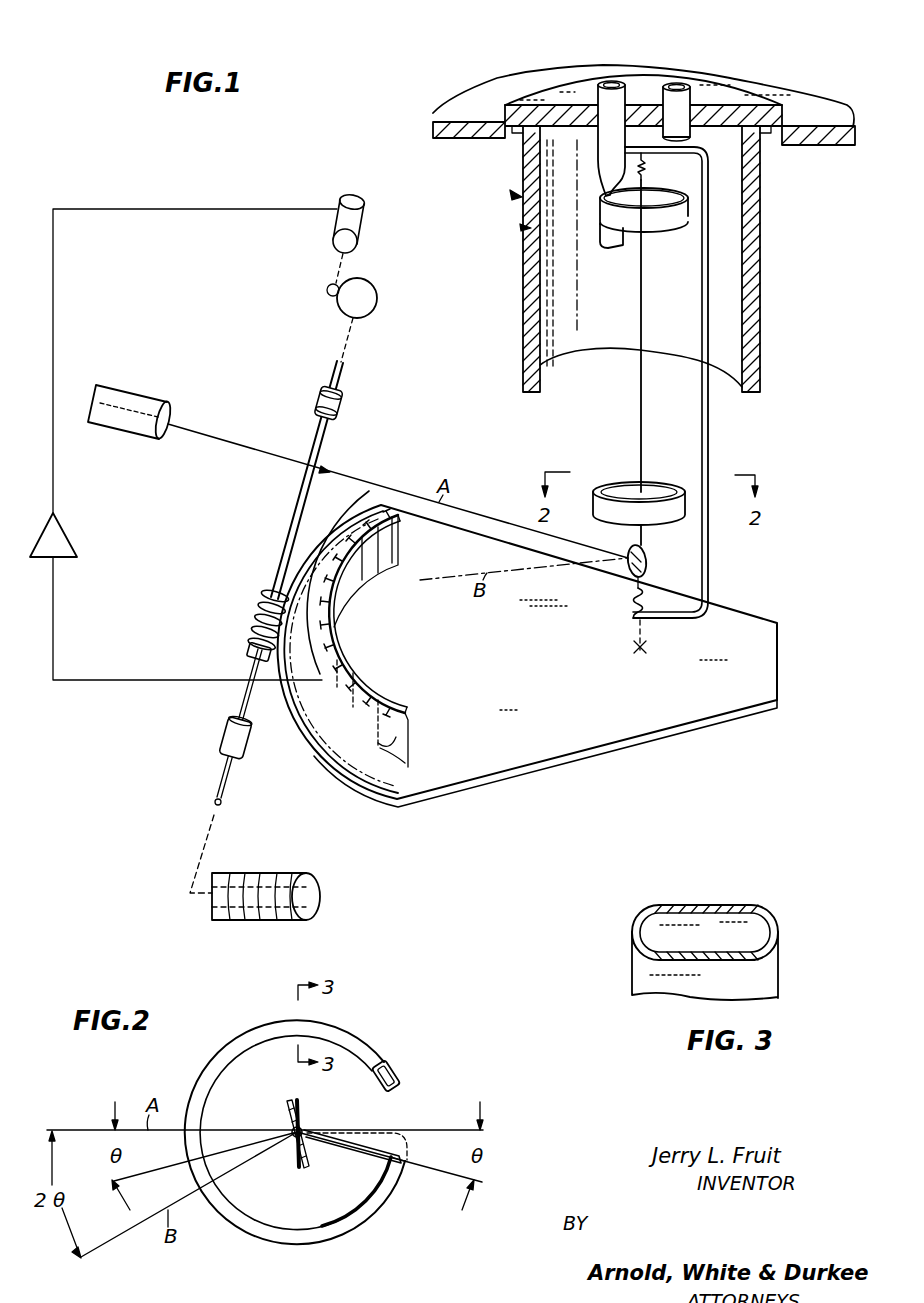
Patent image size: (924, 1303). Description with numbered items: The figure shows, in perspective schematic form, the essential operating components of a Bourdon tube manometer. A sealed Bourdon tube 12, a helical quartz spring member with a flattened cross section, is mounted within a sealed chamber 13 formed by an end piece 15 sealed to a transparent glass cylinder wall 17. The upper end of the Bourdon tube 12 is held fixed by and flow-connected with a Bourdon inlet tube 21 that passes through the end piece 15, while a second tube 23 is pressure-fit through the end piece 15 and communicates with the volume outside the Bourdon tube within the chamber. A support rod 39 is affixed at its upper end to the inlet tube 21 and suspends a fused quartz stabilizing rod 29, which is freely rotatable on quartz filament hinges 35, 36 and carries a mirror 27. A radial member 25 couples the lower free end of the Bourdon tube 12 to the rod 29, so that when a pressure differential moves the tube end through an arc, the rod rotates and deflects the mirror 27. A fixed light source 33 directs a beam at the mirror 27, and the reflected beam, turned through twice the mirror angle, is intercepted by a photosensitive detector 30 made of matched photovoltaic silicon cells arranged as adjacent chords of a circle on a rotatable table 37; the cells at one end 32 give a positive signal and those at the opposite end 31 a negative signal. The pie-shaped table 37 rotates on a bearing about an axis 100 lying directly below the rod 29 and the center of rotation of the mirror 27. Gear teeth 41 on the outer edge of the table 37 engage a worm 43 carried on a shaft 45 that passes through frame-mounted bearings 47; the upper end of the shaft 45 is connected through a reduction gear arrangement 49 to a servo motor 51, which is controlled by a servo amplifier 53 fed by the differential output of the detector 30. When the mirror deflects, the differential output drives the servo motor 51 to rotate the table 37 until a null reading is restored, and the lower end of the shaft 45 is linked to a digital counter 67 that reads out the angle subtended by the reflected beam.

In FIG. 1, the Bourdon tube 12 is at (613, 238).
In FIG. 2, the Bourdon tube 12 is at (366, 1046).
In FIG. 3, the Bourdon tube 12 is at (774, 913).
In FIG. 1, the sealed chamber 13 is at (606, 329).
In FIG. 1, the end piece 15 is at (560, 85).
In FIG. 1, the transparent cylinder wall 17 is at (530, 197).
In FIG. 1, the Bourdon inlet tube 21 is at (632, 97).
In FIG. 1, the tube 23 is at (692, 93).
In FIG. 1, the radial member 25 is at (650, 487).
In FIG. 2, the radial member 25 is at (358, 1145).
In FIG. 1, the mirror 27 is at (647, 560).
In FIG. 2, the mirror 27 is at (294, 1168).
In FIG. 1, the stabilizing rod 29 is at (640, 388).
In FIG. 1, the photosensitive detector 30 is at (383, 638).
In FIG. 1, the cells at opposite end 31 is at (393, 702).
In FIG. 1, the cells at one end 32 is at (353, 586).
In FIG. 1, the light source 33 is at (148, 403).
In FIG. 1, the quartz filament hinge 35 is at (645, 171).
In FIG. 1, the quartz filament hinge 36 is at (630, 600).
In FIG. 1, the rotatable table 37 is at (544, 699).
In FIG. 1, the support rod 39 is at (703, 575).
In FIG. 1, the gear teeth 41 is at (370, 785).
In FIG. 1, the worm 43 is at (253, 617).
In FIG. 1, the shaft 45 is at (276, 552).
In FIG. 1, the bearings 47 is at (340, 408).
In FIG. 1, the reduction gear arrangement 49 is at (338, 278).
In FIG. 1, the servo motor 51 is at (367, 210).
In FIG. 1, the servo amplifier 53 is at (72, 538).
In FIG. 1, the digital counter 67 is at (287, 873).
In FIG. 1, the axis 100 is at (639, 653).